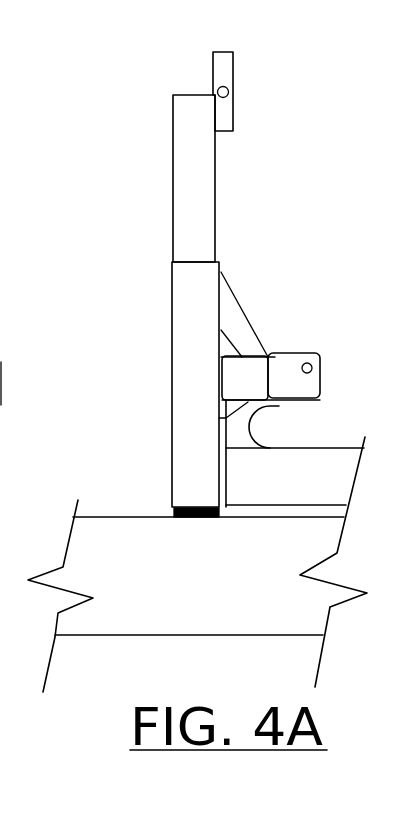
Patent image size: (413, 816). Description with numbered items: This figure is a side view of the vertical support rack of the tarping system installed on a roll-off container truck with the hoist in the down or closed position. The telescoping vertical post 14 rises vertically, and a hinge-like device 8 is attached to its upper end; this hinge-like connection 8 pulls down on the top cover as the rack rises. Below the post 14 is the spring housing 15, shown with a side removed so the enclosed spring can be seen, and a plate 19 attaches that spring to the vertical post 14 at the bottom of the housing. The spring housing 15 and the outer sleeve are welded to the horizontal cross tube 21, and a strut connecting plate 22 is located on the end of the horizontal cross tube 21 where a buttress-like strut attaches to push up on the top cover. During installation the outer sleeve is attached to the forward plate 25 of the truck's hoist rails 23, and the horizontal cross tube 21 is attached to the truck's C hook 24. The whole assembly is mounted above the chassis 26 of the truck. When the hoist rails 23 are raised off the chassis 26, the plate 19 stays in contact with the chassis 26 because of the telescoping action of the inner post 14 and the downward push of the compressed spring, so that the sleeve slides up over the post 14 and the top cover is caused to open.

The hinge-like device 8 is at (167, 84).
The vertical post 14 is at (143, 178).
The spring housing 15 is at (112, 384).
The plate 19 is at (118, 483).
The horizontal cross tube 21 is at (284, 308).
The strut connecting plate 22 is at (329, 340).
The hoist rail 23 is at (229, 549).
The C hook 24 is at (322, 415).
The forward plate 25 is at (192, 452).
The chassis 26 is at (175, 596).